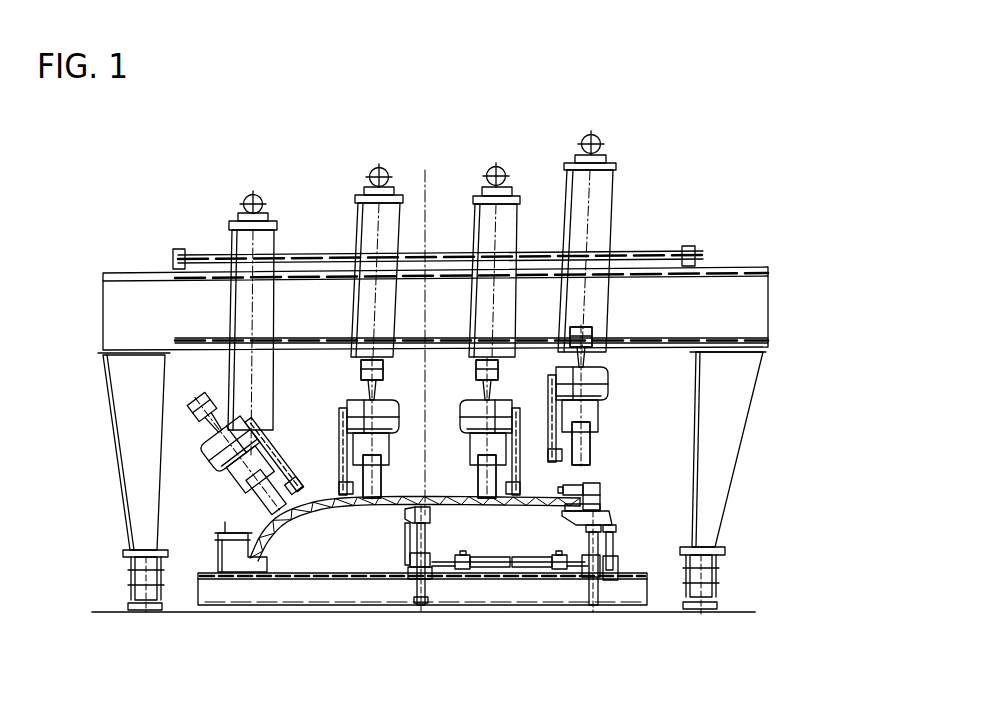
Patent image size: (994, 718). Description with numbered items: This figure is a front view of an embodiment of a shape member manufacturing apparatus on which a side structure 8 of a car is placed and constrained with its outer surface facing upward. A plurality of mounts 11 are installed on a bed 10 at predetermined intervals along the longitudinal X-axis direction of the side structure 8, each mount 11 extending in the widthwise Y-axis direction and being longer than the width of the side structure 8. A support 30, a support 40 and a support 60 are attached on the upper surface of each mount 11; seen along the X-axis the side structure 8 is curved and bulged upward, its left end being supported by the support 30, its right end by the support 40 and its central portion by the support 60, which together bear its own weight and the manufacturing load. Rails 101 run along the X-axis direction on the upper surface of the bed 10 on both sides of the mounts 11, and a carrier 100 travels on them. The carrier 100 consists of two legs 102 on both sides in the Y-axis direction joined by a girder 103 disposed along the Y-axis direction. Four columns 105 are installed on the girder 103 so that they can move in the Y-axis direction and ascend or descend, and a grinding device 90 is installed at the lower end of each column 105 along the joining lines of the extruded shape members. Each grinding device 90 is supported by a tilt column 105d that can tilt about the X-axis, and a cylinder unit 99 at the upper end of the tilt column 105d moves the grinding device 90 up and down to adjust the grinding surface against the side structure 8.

The carrier 100 is at (752, 160).
The rails 101 is at (127, 603).
The legs 102 is at (142, 458).
The girder 103 is at (676, 295).
The columns 105 is at (275, 240).
The tilt column 105d is at (212, 440).
The cylinder unit 99 is at (196, 411).
The grinding device 90 is at (236, 504).
The support 30 is at (270, 551).
The side structure 8 is at (330, 512).
The bed 10 is at (318, 618).
The mounts 11 is at (410, 592).
The support 40 is at (563, 538).
The support 60 is at (440, 531).